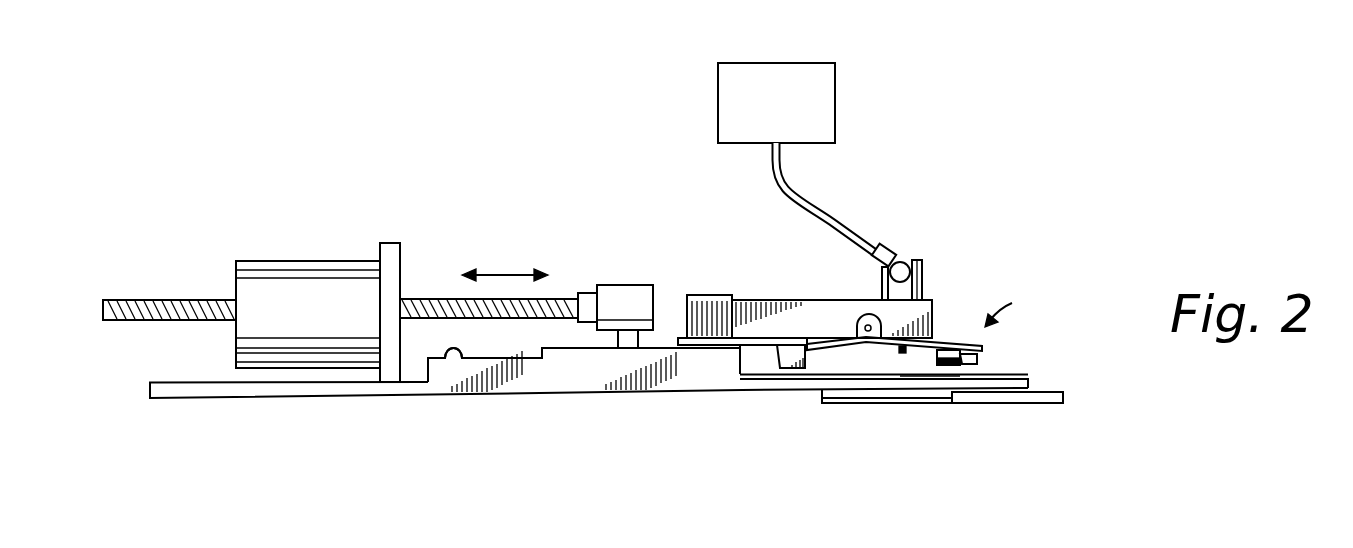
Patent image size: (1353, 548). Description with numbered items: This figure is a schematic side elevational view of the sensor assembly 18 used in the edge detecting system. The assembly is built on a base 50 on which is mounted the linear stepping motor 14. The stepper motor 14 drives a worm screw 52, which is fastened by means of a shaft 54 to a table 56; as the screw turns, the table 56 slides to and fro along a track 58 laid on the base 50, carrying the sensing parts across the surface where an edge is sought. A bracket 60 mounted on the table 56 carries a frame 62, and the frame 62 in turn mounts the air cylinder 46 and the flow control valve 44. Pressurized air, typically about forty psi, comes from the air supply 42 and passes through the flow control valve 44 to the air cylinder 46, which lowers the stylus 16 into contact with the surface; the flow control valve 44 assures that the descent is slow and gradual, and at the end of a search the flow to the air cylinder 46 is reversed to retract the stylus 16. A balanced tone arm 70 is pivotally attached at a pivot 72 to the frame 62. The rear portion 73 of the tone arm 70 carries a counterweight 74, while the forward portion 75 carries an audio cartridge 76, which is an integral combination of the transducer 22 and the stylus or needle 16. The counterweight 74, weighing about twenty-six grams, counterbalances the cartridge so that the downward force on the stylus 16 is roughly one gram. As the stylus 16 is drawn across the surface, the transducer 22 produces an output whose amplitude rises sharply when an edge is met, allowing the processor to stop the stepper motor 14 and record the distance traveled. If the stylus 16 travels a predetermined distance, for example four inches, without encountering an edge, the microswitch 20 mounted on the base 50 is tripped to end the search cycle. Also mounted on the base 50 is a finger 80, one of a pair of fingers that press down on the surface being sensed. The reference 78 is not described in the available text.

The stepper motor 14 is at (305, 262).
The stylus 16 is at (973, 367).
The sensor assembly 18 is at (497, 151).
The microswitch 20 is at (738, 358).
The transducer 22 is at (940, 377).
The air supply 42 is at (835, 103).
The flow control valve 44 is at (889, 246).
The air cylinder 46 is at (910, 262).
The base 50 is at (211, 398).
The worm screw 52 is at (422, 298).
The shaft 54 is at (612, 342).
The table 56 is at (557, 348).
The track 58 is at (450, 352).
The bracket 60 is at (707, 295).
The frame 62 is at (782, 300).
The balanced tone arm 70 is at (1018, 305).
The pivot 72 is at (868, 332).
The rear portion 73 is at (817, 352).
The counterweight 74 is at (773, 355).
The forward portion 75 is at (927, 357).
The audio cartridge 76 is at (947, 350).
The pin 78 is at (903, 355).
The finger 80 is at (1017, 374).